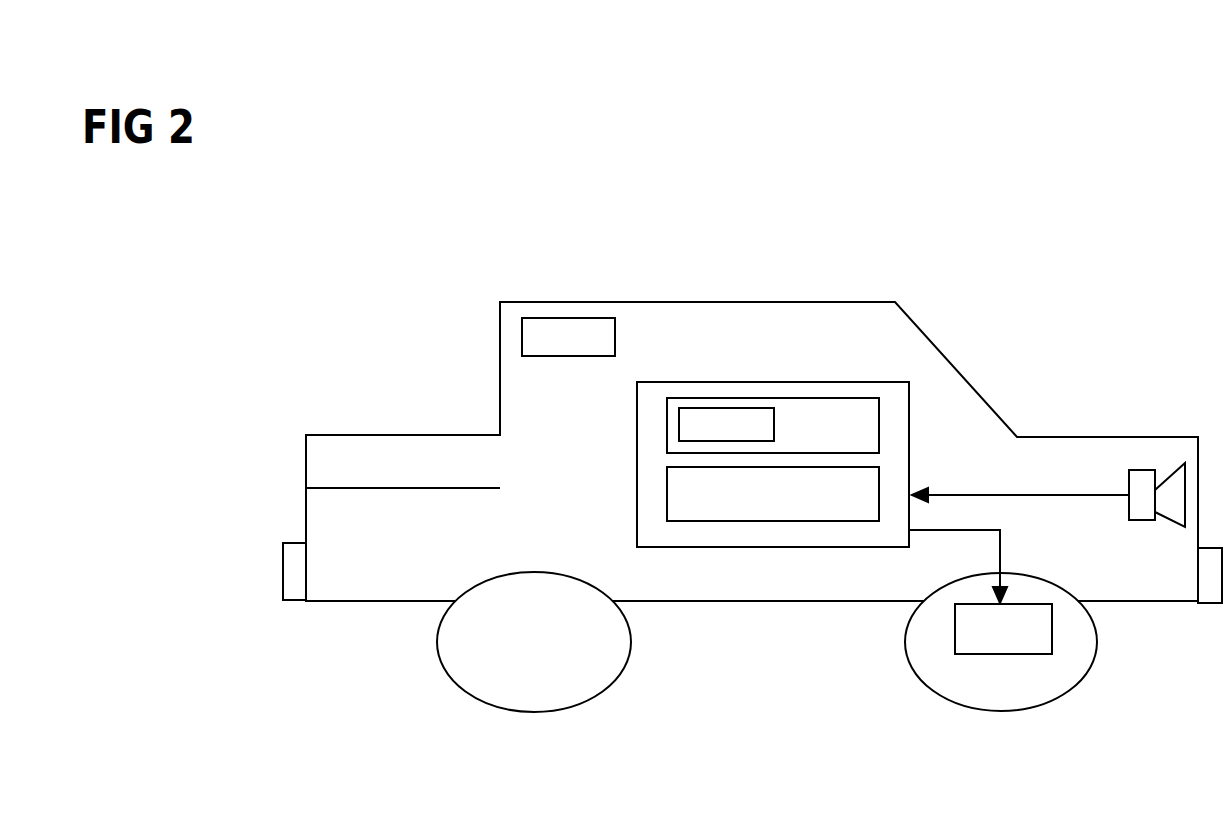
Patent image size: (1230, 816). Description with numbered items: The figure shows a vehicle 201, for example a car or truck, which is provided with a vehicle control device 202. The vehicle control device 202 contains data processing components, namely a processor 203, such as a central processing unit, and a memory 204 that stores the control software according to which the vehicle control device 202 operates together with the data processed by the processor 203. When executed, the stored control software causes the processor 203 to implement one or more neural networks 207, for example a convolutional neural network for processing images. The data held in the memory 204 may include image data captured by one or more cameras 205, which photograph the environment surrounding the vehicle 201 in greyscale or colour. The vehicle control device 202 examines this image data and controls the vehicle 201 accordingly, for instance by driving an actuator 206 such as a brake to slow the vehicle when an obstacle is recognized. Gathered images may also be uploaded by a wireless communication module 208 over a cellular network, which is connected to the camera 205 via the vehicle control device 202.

The vehicle 201 is at (628, 302).
The vehicle control device 202 is at (743, 382).
The processor 203 is at (667, 423).
The memory 204 is at (667, 493).
The camera 205 is at (1147, 470).
The actuator 206 is at (1000, 655).
The neural network 207 is at (775, 430).
The wireless communication module 208 is at (615, 348).